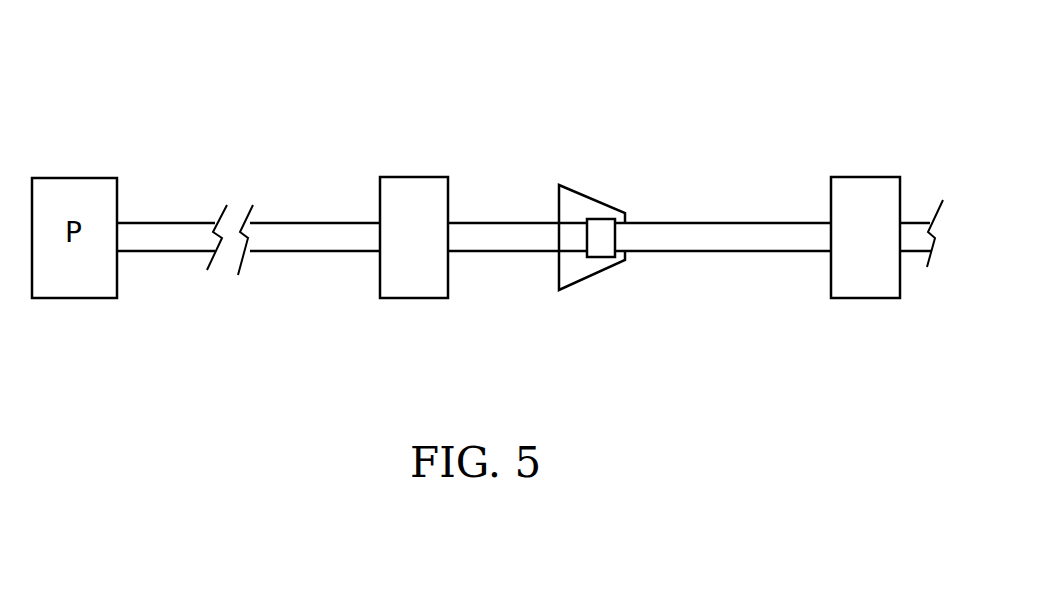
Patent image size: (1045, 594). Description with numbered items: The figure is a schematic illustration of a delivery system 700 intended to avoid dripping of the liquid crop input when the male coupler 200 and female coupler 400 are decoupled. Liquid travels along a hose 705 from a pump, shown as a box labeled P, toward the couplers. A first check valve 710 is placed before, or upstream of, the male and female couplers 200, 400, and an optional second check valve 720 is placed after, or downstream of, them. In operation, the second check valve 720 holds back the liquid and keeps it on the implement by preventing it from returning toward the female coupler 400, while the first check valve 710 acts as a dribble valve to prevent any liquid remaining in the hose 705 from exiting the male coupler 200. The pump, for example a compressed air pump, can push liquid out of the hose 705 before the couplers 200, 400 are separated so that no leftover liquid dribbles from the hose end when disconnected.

The delivery system 700 is at (548, 75).
The hose 705 is at (308, 228).
The first check valve 710 is at (403, 283).
The second check valve 720 is at (858, 282).
The male coupler 200 is at (532, 210).
The female coupler 400 is at (628, 195).